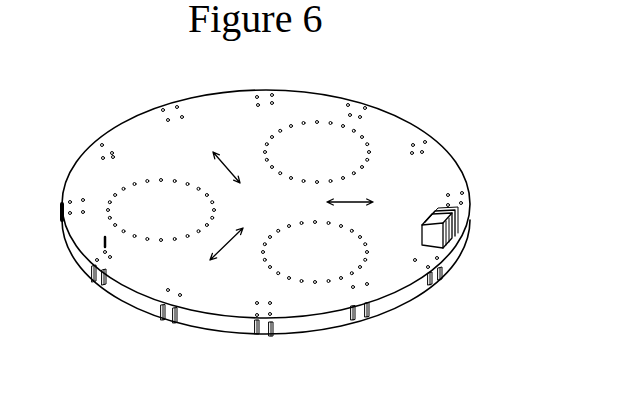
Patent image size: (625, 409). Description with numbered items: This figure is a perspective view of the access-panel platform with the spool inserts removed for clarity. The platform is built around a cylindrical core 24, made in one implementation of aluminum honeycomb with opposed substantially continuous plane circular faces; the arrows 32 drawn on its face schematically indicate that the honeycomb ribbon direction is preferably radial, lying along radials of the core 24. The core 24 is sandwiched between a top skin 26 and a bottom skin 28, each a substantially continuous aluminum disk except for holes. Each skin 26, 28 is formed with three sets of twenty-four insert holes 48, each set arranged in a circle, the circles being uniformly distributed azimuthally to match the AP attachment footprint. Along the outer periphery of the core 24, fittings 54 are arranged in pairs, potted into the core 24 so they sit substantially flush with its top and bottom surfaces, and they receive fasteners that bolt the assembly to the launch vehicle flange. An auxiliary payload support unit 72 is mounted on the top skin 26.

The core 24 is at (332, 322).
The top skin 26 is at (293, 100).
The bottom skin 28 is at (293, 335).
The arrows 32 is at (352, 197).
The insert holes 48 is at (310, 123).
The fittings 54 is at (443, 272).
The auxiliary payload support unit 72 is at (456, 230).